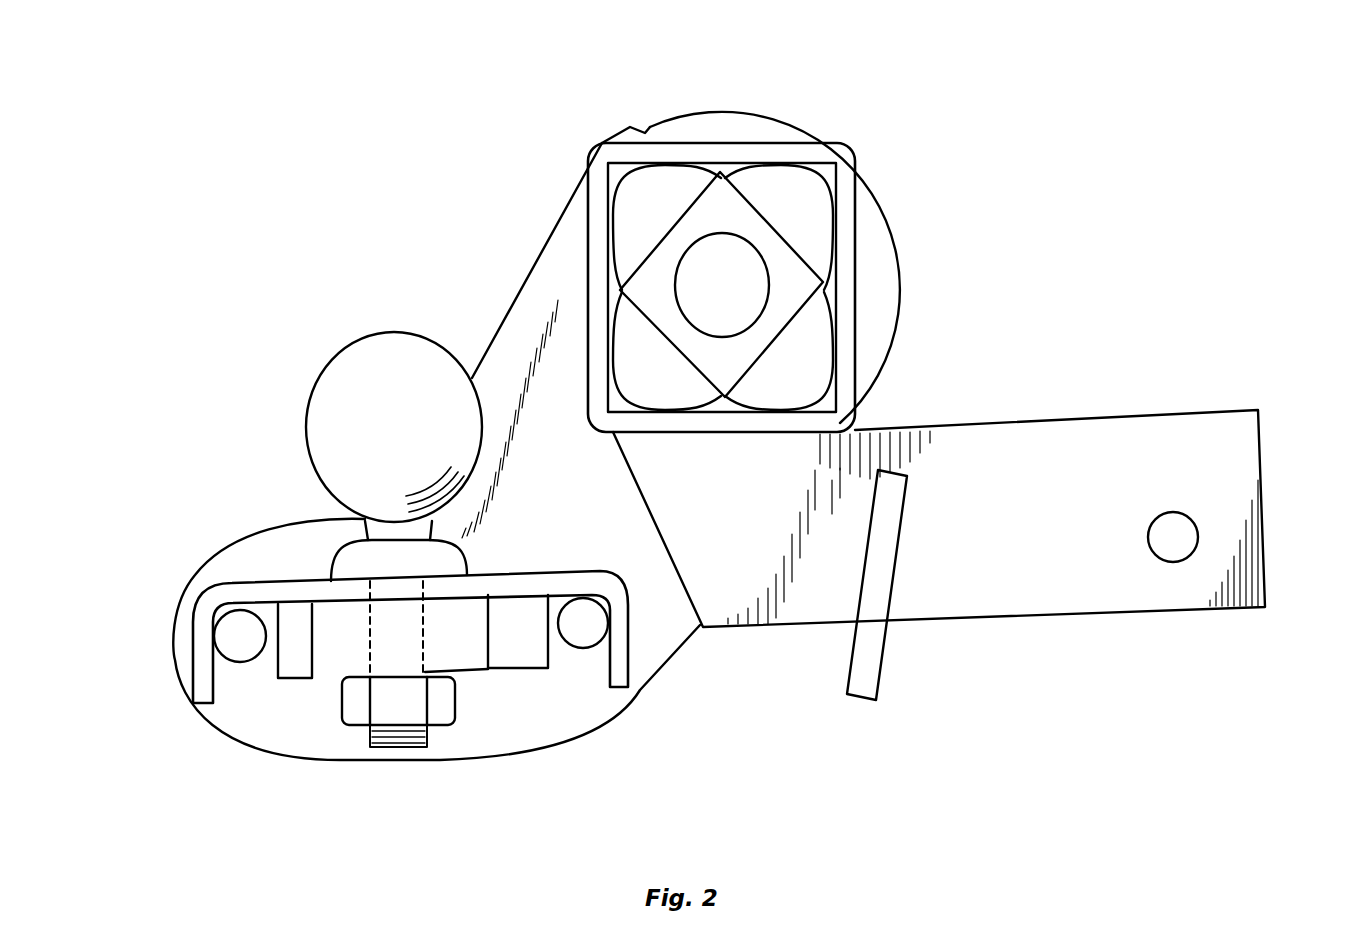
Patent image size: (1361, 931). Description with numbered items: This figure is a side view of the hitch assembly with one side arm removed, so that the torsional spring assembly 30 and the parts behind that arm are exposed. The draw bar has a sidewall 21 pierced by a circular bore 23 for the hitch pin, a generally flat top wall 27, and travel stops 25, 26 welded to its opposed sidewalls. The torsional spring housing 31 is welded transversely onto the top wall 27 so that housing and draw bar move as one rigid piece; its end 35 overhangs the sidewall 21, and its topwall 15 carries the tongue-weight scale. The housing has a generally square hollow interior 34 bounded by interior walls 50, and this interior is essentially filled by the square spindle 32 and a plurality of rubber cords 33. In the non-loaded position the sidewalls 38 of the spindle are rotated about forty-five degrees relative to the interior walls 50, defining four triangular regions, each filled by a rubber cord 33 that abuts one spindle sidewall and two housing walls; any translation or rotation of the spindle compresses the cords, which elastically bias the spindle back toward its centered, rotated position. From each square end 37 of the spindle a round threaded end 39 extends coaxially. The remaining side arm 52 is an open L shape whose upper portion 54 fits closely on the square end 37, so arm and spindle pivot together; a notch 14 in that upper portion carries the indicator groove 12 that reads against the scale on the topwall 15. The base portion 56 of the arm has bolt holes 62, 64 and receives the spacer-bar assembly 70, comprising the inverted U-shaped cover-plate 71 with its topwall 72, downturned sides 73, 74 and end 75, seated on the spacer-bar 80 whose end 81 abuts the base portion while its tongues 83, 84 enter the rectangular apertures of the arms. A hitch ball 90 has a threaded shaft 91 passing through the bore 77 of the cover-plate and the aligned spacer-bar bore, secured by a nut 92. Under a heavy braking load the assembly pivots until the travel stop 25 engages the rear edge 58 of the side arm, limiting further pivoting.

The indicator groove 12 is at (767, 118).
The notch 14 is at (808, 125).
The topwall of torsional spring housing 15 is at (702, 142).
The sidewall of draw bar 21 is at (1103, 607).
The circular bore 23 is at (1180, 560).
The travel stop 25 is at (878, 690).
The travel stop 26 is at (1262, 458).
The top wall of draw bar 27 is at (1185, 410).
The torsional spring assembly 30 is at (857, 268).
The torsional spring housing 31 is at (850, 332).
The spindle 32 is at (785, 250).
The rubber cords 33 is at (635, 183).
The square hollow interior 34 is at (840, 393).
The end of torsional spring housing 35 is at (855, 155).
The square end of spindle 37 is at (648, 273).
The sidewall of spindle 38 is at (698, 190).
The round threaded end 39 is at (690, 258).
The interior walls of torsional spring housing 50 is at (733, 160).
The side arm 52 is at (593, 742).
The upper portion of side arm 54 is at (683, 650).
The base portion of side arm 56 is at (293, 763).
The rear edge of side arm 58 is at (703, 627).
The bolt hole 62 is at (223, 658).
The bolt hole 64 is at (585, 652).
The spacer-bar assembly 70 is at (303, 578).
The cover-plate 71 is at (182, 593).
The topwall of cover-plate 72 is at (207, 588).
The side of cover-plate 73 is at (190, 642).
The side of cover-plate 74 is at (632, 680).
The end of cover-plate 75 is at (197, 602).
The bore of cover-plate 77 is at (368, 580).
The spacer-bar 80 is at (367, 643).
The end of spacer-bar 81 is at (548, 673).
The tongue of spacer-bar 83 is at (475, 663).
The tongue of spacer-bar 84 is at (327, 662).
The hitch ball 90 is at (330, 365).
The threaded shaft 91 is at (397, 747).
The nut 92 is at (450, 748).